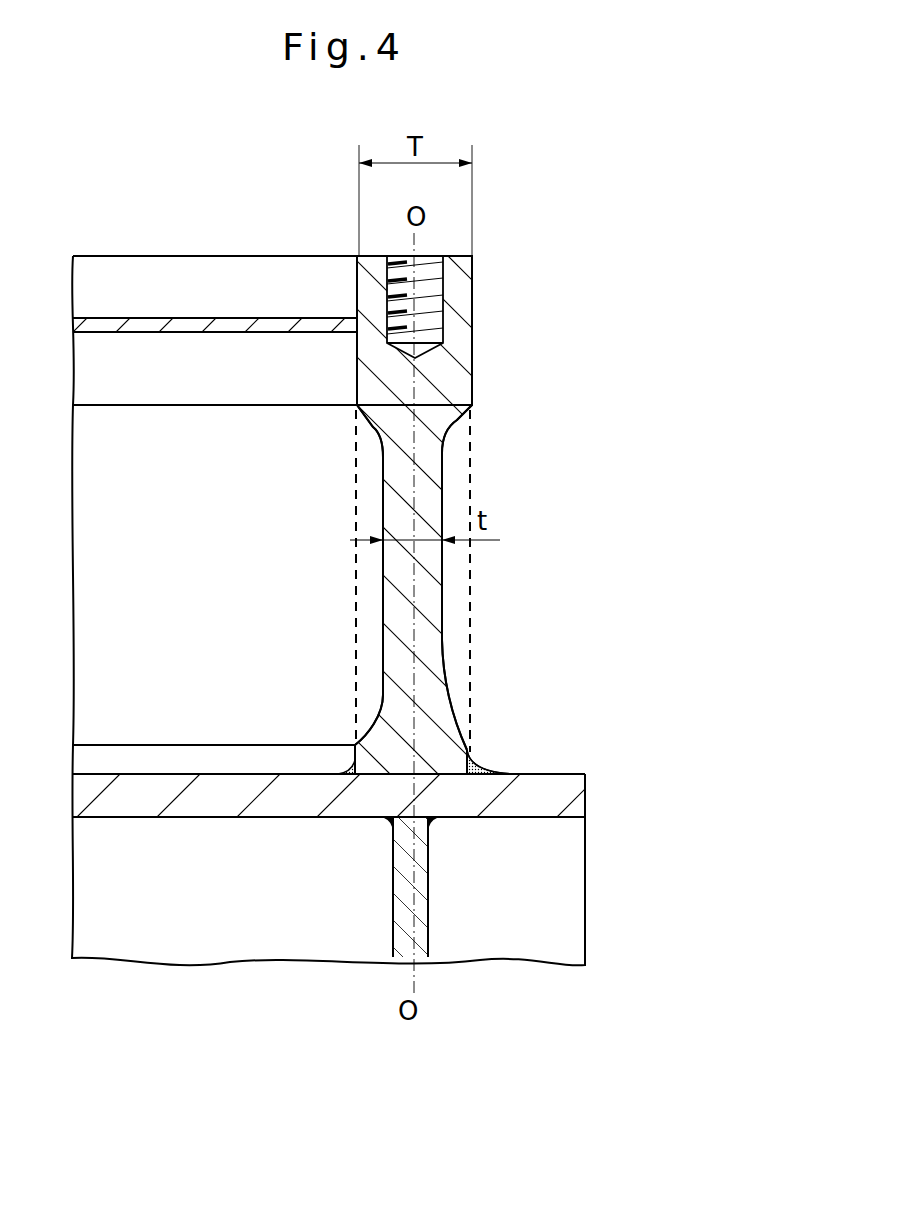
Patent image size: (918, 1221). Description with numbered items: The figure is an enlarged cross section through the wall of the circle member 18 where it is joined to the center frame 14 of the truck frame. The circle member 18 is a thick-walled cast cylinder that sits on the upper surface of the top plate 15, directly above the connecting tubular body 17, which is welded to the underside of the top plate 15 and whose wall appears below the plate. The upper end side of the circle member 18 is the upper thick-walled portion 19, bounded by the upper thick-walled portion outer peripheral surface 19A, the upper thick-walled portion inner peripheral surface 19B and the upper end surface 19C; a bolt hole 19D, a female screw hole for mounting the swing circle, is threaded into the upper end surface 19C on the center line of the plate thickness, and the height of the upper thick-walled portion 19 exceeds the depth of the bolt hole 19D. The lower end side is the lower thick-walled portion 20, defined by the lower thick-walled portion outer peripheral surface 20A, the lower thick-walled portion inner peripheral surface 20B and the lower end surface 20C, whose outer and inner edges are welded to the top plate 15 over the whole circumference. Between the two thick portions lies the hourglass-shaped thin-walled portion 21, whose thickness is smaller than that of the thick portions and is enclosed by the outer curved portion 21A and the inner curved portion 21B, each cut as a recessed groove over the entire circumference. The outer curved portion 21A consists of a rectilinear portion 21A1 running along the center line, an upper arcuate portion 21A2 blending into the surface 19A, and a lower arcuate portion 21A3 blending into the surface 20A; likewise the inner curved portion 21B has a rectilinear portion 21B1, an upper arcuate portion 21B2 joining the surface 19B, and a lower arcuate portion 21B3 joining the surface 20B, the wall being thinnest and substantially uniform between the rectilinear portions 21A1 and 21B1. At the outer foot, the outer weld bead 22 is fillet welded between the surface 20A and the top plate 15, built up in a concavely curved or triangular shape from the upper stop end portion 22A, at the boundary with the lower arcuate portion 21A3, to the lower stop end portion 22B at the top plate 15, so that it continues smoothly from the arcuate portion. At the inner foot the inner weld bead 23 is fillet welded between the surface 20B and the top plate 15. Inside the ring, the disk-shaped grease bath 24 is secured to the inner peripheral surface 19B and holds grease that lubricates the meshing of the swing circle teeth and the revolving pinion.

The center frame 14 is at (257, 965).
The top plate 15 is at (183, 805).
The connecting tubular body 17 is at (420, 892).
The circle member 18 is at (140, 252).
The upper thick-walled portion 19 is at (437, 370).
The upper thick-walled portion outer peripheral surface 19A is at (473, 280).
The upper thick-walled portion inner peripheral surface 19B is at (357, 287).
The upper end surface 19C is at (454, 257).
The bolt hole 19D is at (433, 310).
The lower thick-walled portion 20 is at (397, 755).
The lower thick-walled portion outer peripheral surface 20A is at (482, 763).
The lower thick-walled portion inner peripheral surface 20B is at (353, 750).
The lower end surface 20C is at (438, 765).
The hourglass-shaped thin-walled portion 21 is at (425, 598).
The outer curved portion 21A is at (443, 493).
The rectilinear portion 21A1 is at (443, 573).
The upper arcuate portion 21A2 is at (457, 428).
The lower arcuate portion 21A3 is at (448, 648).
The inner curved portion 21B is at (383, 498).
The rectilinear portion 21B1 is at (383, 577).
The upper arcuate portion 21B2 is at (367, 422).
The lower arcuate portion 21B3 is at (377, 707).
The outer weld bead 22 is at (490, 775).
The upper stop end portion 22A is at (470, 743).
The lower stop end portion 22B is at (515, 775).
The inner weld bead 23 is at (345, 770).
The grease bath 24 is at (215, 325).